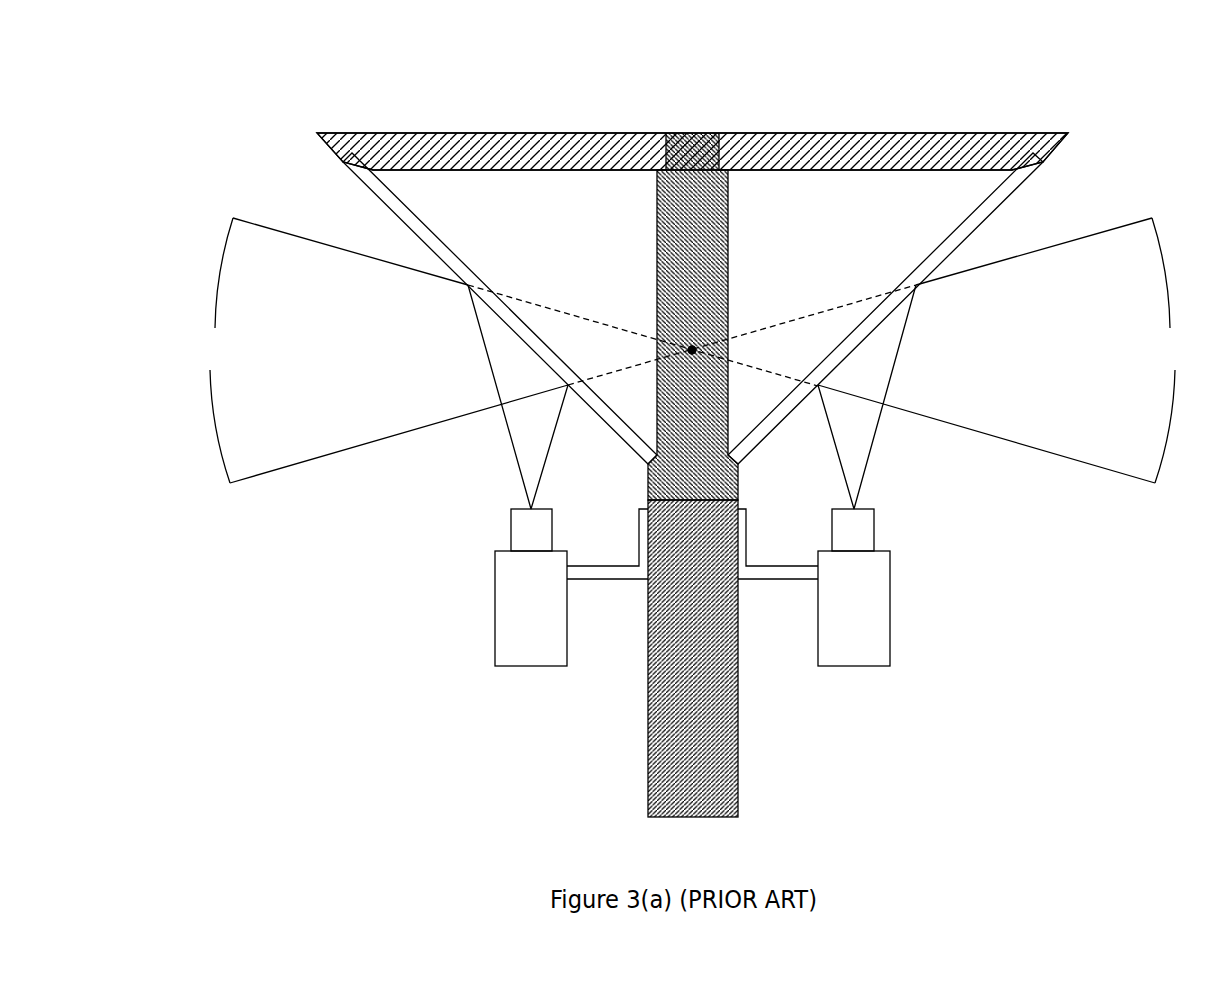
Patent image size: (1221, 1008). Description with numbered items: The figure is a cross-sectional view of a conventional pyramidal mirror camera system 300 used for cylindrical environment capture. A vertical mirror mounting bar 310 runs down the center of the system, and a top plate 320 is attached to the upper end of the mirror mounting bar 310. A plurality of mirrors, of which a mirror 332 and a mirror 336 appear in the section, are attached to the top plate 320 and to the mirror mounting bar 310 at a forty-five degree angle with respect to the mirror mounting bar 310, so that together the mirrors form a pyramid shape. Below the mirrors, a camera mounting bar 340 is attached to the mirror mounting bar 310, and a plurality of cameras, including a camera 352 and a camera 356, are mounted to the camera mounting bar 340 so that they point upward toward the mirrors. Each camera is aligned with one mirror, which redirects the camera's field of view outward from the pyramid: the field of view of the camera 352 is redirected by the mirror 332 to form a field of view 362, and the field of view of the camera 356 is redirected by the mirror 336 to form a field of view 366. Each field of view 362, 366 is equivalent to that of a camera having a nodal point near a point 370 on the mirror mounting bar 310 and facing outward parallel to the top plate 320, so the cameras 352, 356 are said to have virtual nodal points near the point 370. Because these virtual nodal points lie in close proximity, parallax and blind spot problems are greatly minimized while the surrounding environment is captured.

The pyramidal mirror camera system 300 is at (728, 36).
The mirror mounting bar 310 is at (692, 133).
The top plate 320 is at (497, 133).
The mirror 332 is at (443, 238).
The mirror 336 is at (945, 238).
The camera mounting bar 340 is at (690, 817).
The camera 352 is at (571, 587).
The camera 356 is at (814, 587).
The field of view 362 is at (211, 350).
The field of view 366 is at (1177, 350).
The point 370 is at (692, 350).